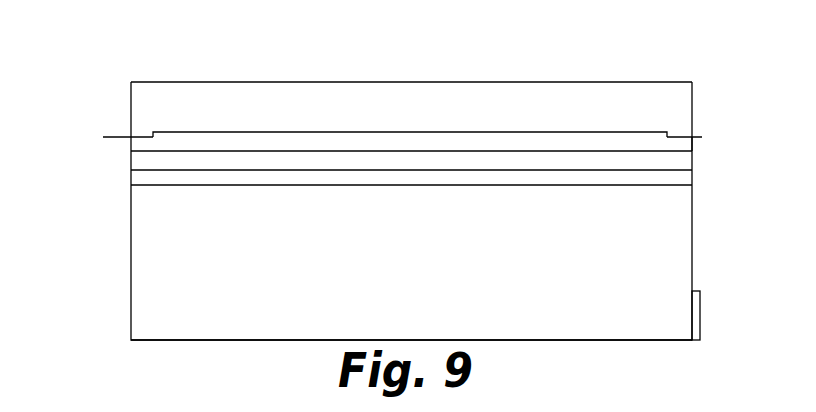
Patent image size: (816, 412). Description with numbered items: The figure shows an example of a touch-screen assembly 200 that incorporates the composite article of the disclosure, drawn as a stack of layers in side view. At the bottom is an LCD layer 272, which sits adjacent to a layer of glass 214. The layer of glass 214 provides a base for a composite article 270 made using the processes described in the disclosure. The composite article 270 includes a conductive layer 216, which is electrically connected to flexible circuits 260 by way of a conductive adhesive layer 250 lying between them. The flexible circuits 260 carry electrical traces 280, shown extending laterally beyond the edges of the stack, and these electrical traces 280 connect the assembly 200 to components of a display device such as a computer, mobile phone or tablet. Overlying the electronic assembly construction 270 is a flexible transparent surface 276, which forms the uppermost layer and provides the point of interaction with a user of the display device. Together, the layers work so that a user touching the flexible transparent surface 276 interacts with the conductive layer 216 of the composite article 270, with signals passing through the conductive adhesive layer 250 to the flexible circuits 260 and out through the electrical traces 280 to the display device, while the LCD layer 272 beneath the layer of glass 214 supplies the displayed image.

The touch-screen assembly 200 is at (636, 55).
The flexible transparent surface 276 is at (140, 90).
The flexible circuits 260 is at (143, 131).
The electrical traces 280 is at (120, 138).
The conductive adhesive layer 250 is at (411, 140).
The conductive layer 216 is at (140, 165).
The layer of glass 214 is at (140, 176).
The composite article 270 is at (698, 150).
The LCD layer 272 is at (145, 302).